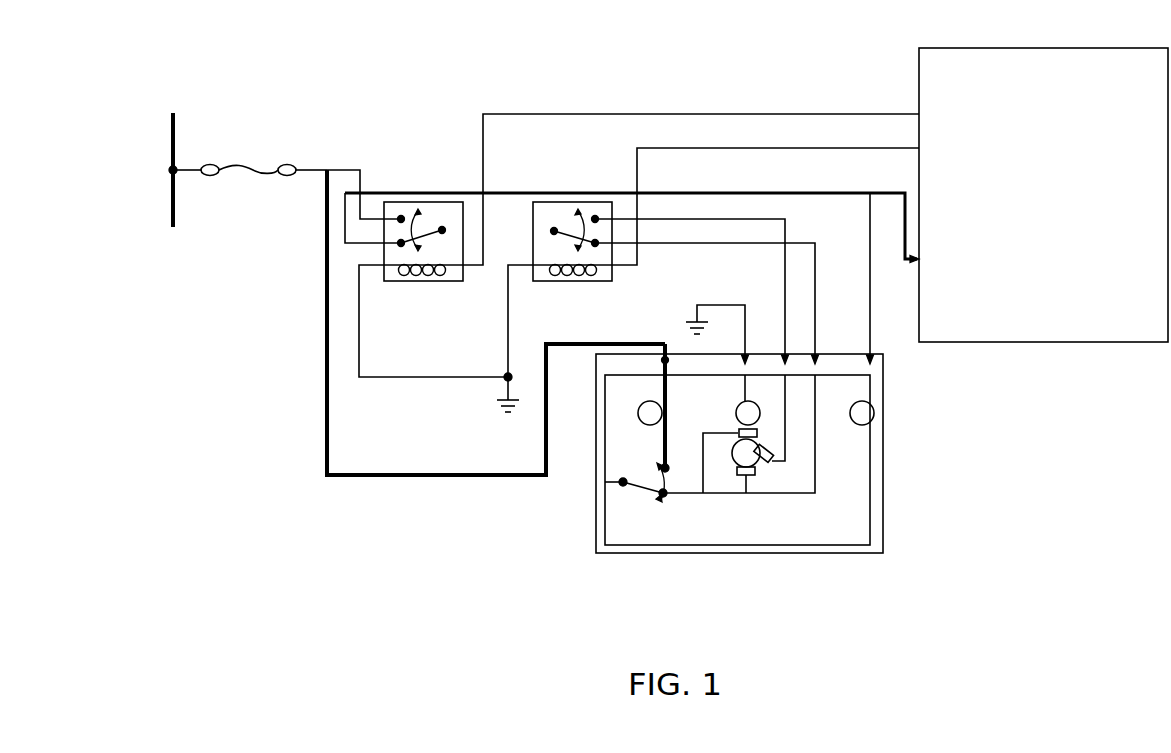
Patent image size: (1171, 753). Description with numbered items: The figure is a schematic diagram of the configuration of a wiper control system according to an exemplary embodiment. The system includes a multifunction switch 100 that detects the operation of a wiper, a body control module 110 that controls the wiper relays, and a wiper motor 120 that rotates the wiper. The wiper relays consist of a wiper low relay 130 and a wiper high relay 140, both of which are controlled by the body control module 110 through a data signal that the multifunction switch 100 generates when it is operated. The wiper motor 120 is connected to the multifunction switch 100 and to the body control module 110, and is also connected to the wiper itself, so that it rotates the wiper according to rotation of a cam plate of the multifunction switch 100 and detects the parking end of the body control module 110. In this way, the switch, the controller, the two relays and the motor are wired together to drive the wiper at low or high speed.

The multifunction switch 100 is at (176, 207).
The body control module 110 is at (1107, 342).
The wiper motor 120 is at (822, 553).
The wiper low relay 130 is at (422, 202).
The wiper high relay 140 is at (572, 202).